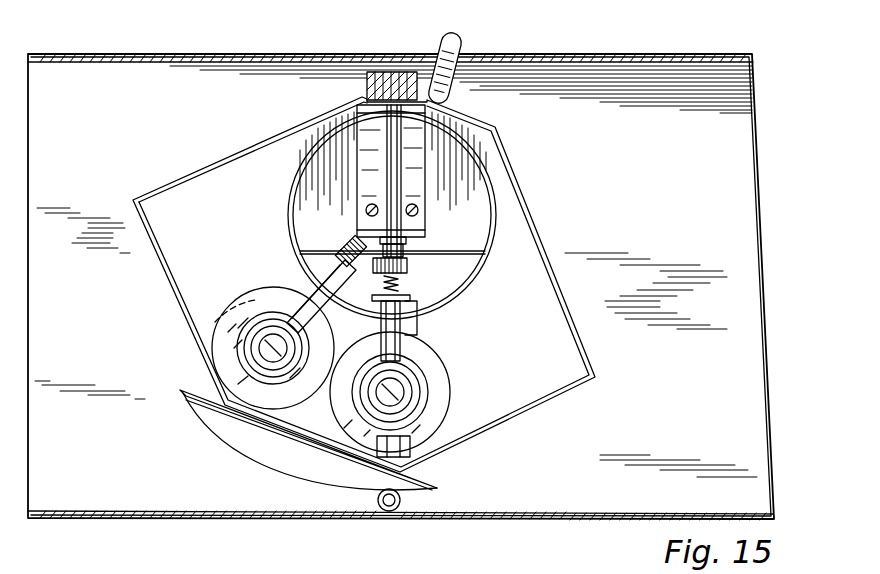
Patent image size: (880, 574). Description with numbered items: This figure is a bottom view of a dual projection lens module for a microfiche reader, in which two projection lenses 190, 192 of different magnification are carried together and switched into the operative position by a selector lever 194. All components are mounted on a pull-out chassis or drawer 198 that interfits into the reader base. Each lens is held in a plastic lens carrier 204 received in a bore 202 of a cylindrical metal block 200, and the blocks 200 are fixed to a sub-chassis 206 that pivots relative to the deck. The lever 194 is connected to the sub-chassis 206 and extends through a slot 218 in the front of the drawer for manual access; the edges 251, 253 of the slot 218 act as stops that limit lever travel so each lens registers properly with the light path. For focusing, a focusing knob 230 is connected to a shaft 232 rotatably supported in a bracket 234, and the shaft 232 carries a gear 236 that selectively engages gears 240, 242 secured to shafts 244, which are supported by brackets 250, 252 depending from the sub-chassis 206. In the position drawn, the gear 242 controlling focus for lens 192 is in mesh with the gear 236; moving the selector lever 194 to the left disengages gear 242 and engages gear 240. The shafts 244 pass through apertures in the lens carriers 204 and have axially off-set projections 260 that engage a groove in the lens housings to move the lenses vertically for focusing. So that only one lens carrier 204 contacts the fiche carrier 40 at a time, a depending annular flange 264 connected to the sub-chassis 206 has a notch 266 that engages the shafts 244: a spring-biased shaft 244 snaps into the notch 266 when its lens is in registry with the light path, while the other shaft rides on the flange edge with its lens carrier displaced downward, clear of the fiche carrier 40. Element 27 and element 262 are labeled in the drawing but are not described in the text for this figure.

The guide plate 27 is at (422, 460).
The fiche carrier 40 is at (487, 569).
The projection lens 190 is at (260, 347).
The projection lens 192 is at (404, 384).
The selector lever 194 is at (458, 42).
The pull-out chassis or drawer 198 is at (724, 80).
The cylindrical metal blocks 200 is at (248, 298).
The bores 202 is at (442, 430).
The plastic lens carriers 204 is at (243, 350).
The sub-chassis 206 is at (176, 187).
The slot 218 is at (358, 57).
The focusing knob 230 is at (385, 86).
The shaft 232 is at (396, 163).
The bracket 234 is at (416, 178).
The gear 236 is at (430, 256).
The gear 240 is at (348, 238).
The gear 242 is at (410, 268).
The shafts 244 is at (342, 256).
The bracket 250 is at (318, 269).
The edge of slot 251 is at (329, 52).
The bracket 252 is at (430, 316).
The edge of slot 253 is at (492, 58).
The axially off-set projections 260 is at (234, 322).
The base 262 is at (329, 569).
The depending annular flange 264 is at (478, 158).
The notch 266 is at (430, 333).